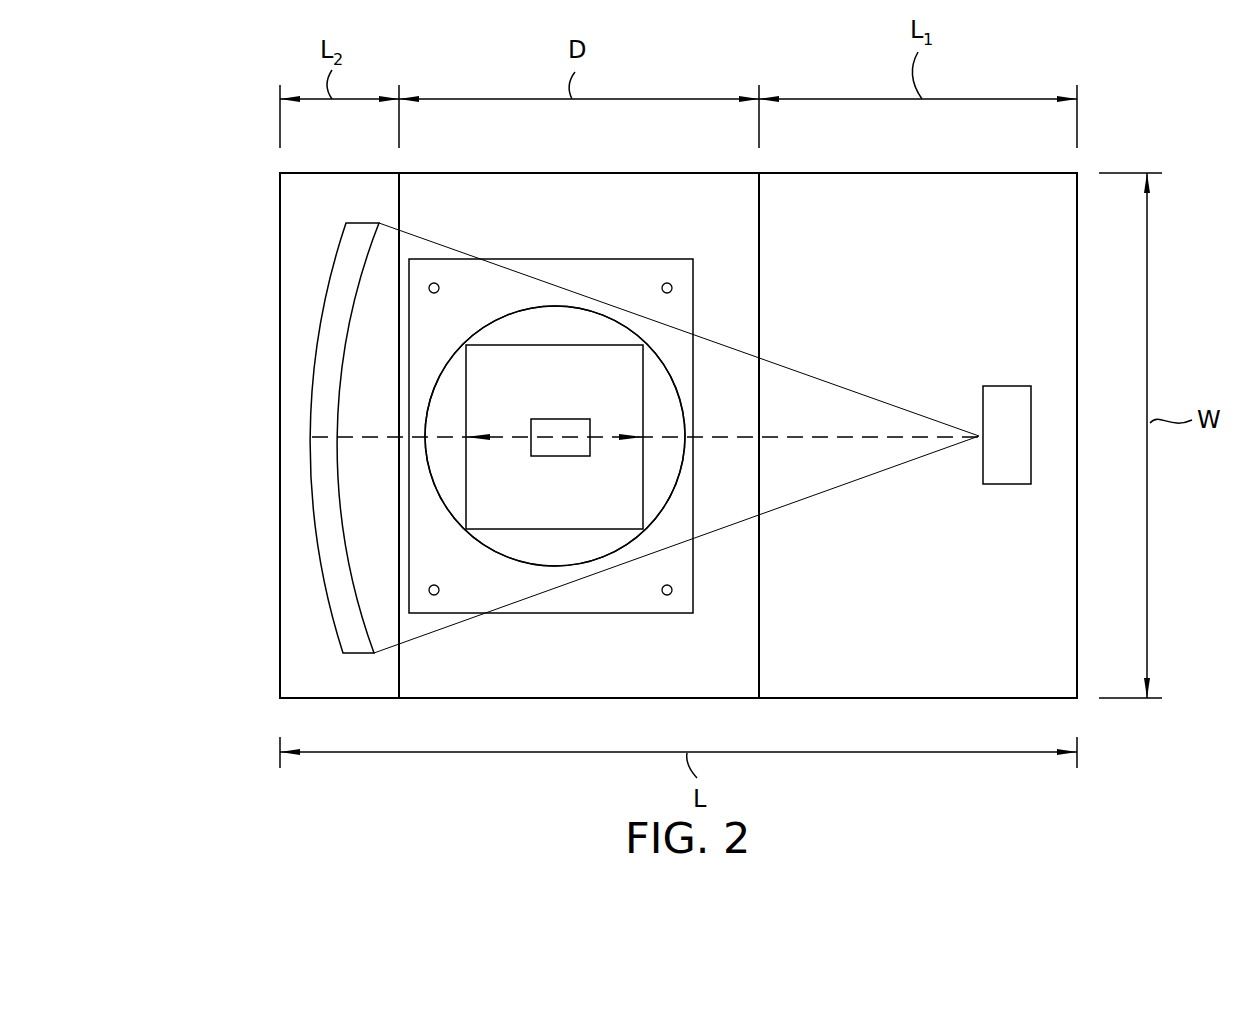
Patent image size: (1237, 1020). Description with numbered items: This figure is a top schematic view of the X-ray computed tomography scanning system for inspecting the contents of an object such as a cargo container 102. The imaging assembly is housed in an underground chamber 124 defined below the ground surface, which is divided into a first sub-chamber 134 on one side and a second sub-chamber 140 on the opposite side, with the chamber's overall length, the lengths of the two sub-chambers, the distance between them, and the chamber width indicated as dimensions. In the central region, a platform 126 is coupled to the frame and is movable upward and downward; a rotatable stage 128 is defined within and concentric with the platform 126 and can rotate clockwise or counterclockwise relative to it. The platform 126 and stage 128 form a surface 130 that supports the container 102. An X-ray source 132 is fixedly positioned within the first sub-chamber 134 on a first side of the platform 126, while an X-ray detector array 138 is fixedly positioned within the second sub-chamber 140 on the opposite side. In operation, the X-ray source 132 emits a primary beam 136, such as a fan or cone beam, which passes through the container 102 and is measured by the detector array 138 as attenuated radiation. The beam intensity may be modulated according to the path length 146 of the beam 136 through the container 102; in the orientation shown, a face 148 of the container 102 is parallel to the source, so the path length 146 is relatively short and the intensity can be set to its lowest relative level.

The cargo container 102 is at (531, 521).
The underground chamber 124 is at (680, 207).
The platform 126 is at (583, 259).
The rotatable stage 128 is at (666, 363).
The surface 130 is at (582, 543).
The X-ray source 132 is at (1031, 417).
The first sub-chamber 134 is at (1050, 666).
The primary beam 136 is at (868, 492).
The X-ray detector array 138 is at (322, 325).
The second sub-chamber 140 is at (295, 681).
The path length 146 is at (512, 437).
The face 148 is at (645, 487).